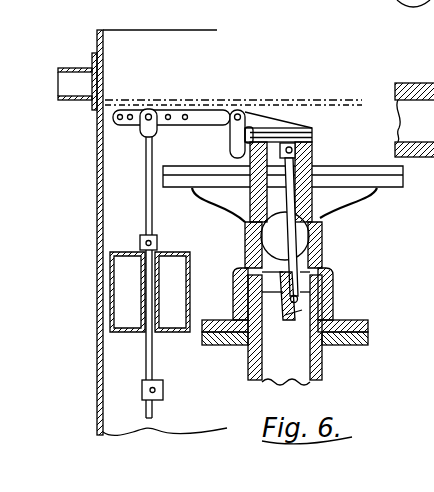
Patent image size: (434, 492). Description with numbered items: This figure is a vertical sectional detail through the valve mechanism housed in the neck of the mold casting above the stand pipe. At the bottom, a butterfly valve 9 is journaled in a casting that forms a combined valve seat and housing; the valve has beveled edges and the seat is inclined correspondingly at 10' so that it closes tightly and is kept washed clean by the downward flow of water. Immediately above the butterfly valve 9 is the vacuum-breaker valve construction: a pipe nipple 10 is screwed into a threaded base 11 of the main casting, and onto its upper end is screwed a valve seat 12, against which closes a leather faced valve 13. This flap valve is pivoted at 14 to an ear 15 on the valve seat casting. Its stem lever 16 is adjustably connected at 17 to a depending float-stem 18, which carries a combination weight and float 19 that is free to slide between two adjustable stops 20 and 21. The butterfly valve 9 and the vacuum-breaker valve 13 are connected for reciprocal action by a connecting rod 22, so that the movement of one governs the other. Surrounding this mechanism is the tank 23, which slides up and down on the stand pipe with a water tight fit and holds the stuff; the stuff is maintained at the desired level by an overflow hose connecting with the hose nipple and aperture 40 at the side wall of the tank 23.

The butterfly valve 9 is at (290, 313).
The pipe nipple 10 is at (306, 243).
The inclined valve seat 10' is at (285, 328).
The threaded base 11 is at (316, 198).
The valve seat 12 is at (313, 143).
The leather faced valve 13 is at (288, 130).
The pivot 14 is at (238, 112).
The ear 15 is at (232, 139).
The stem lever 16 is at (200, 122).
The adjustable connection 17 is at (149, 113).
The float-stem 18 is at (147, 193).
The combination weight and float 19 is at (172, 254).
The adjustable stop 20 is at (158, 238).
The adjustable stop 21 is at (163, 389).
The connecting rod 22 is at (295, 238).
The tank 23 is at (150, 434).
The hose nipple and aperture 40 is at (70, 88).